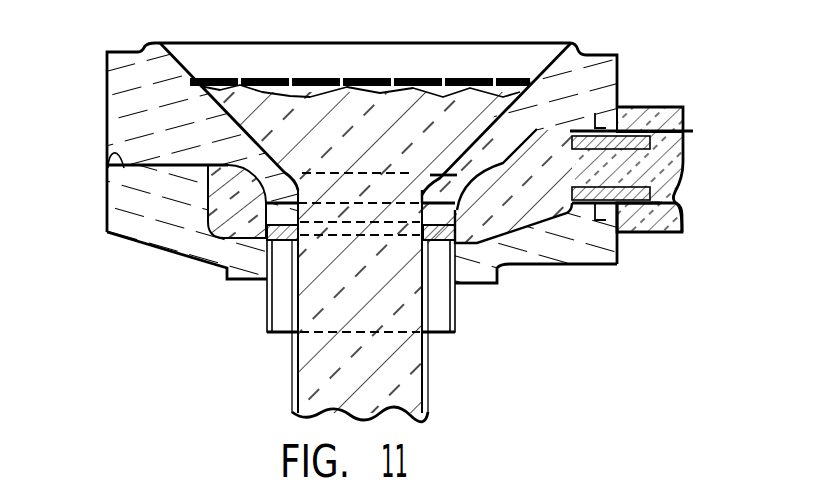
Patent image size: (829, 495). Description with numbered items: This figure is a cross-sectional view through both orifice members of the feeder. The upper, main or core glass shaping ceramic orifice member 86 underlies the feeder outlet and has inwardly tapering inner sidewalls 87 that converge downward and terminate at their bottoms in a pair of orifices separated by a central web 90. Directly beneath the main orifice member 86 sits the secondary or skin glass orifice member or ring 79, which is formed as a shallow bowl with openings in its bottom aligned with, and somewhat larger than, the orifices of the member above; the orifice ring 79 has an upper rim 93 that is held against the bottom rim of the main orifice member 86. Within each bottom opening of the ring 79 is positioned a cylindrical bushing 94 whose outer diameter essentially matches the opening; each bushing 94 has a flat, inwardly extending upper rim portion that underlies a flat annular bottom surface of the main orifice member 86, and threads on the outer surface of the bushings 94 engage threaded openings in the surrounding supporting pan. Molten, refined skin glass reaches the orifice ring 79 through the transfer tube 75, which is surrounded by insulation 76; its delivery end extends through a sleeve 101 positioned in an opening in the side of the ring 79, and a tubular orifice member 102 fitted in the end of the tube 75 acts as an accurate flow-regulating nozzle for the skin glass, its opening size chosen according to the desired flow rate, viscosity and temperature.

The transfer tube 75 is at (690, 132).
The insulation 76 is at (656, 234).
The skin glass orifice ring 79 is at (148, 236).
The core glass shaping ceramic orifice member 86 is at (121, 107).
The inwardly tapering inner sidewalls 87 is at (233, 136).
The central web 90 is at (309, 78).
The upper rim 93 is at (110, 150).
The cylindrical bushing 94 is at (432, 350).
The sleeve 101 is at (597, 117).
The tubular orifice member 102 is at (645, 113).